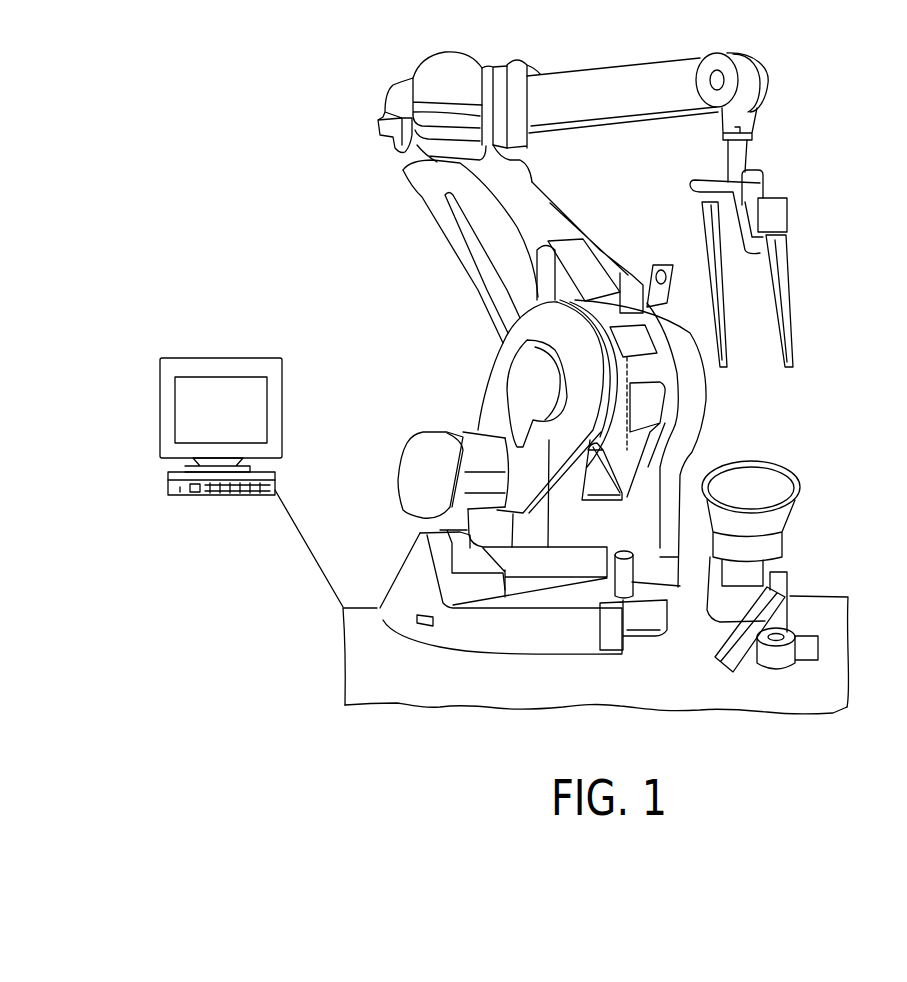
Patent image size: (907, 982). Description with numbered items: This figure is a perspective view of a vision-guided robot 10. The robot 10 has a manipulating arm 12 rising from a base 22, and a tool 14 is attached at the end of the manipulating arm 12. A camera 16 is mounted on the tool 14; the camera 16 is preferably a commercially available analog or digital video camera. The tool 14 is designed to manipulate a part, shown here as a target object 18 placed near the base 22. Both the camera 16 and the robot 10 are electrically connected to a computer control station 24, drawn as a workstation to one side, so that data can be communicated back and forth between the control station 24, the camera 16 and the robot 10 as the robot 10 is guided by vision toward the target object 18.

The robot 10 is at (548, 328).
The manipulating arm 12 is at (770, 84).
The tool 14 is at (792, 307).
The camera 16 is at (785, 217).
The target object 18 is at (802, 490).
The base 22 is at (402, 623).
The computer control station 24 is at (168, 484).